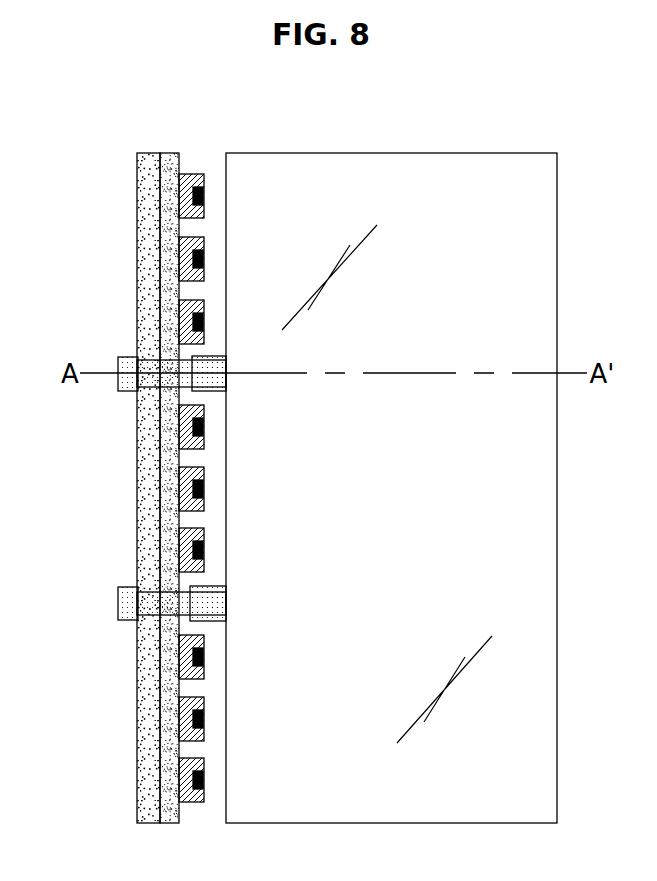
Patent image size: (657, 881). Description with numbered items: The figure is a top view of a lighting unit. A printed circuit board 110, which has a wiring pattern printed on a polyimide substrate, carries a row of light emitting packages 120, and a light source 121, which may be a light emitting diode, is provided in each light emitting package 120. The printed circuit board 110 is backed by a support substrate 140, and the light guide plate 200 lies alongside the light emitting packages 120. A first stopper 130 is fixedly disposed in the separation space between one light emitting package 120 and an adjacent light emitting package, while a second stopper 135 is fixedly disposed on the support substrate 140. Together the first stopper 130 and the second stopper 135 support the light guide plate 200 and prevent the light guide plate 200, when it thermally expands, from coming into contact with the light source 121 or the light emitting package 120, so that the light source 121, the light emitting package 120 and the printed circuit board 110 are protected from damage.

The printed circuit board 110 is at (172, 162).
The light emitting package 120 is at (188, 172).
The light source 121 is at (207, 192).
The first stopper 130 is at (127, 603).
The second stopper 135 is at (212, 621).
The support substrate 140 is at (148, 169).
The light guide plate 200 is at (427, 181).